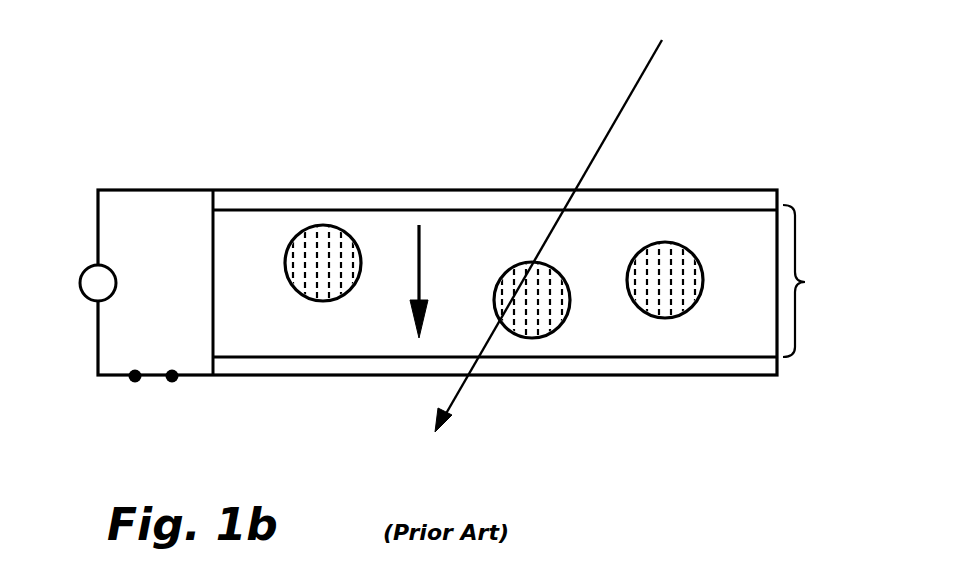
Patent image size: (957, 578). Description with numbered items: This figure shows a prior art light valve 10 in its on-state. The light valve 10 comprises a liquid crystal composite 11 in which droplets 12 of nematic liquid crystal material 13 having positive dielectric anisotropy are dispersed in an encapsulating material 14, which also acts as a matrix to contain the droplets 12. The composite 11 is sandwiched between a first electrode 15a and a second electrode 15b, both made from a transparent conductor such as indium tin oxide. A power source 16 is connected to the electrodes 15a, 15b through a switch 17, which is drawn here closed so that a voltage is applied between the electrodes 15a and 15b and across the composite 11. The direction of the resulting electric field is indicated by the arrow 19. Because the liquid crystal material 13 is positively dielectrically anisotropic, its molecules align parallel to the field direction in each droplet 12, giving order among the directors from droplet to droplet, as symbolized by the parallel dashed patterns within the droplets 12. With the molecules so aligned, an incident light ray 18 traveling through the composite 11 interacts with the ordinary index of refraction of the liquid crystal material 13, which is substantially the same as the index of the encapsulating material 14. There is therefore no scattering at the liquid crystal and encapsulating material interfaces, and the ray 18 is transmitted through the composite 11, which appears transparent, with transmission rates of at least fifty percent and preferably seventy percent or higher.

The light valve 10 is at (195, 131).
The liquid crystal composite 11 is at (823, 281).
The droplets 12 is at (682, 317).
The nematic liquid crystal material 13 is at (322, 285).
The encapsulating material 14 is at (618, 327).
The first electrode 15a is at (747, 188).
The second electrode 15b is at (758, 375).
The power source 16 is at (80, 283).
The switch 17 is at (173, 380).
The incident light ray 18 is at (564, 225).
The arrow 19 is at (422, 252).